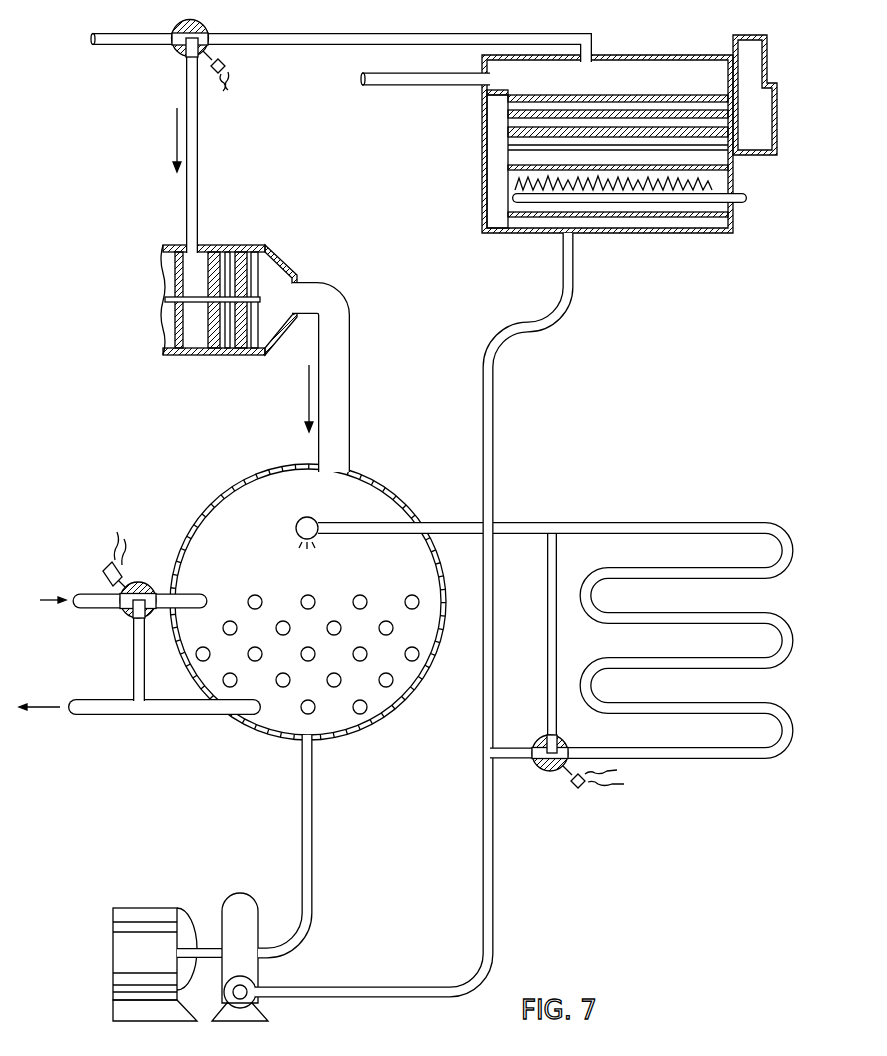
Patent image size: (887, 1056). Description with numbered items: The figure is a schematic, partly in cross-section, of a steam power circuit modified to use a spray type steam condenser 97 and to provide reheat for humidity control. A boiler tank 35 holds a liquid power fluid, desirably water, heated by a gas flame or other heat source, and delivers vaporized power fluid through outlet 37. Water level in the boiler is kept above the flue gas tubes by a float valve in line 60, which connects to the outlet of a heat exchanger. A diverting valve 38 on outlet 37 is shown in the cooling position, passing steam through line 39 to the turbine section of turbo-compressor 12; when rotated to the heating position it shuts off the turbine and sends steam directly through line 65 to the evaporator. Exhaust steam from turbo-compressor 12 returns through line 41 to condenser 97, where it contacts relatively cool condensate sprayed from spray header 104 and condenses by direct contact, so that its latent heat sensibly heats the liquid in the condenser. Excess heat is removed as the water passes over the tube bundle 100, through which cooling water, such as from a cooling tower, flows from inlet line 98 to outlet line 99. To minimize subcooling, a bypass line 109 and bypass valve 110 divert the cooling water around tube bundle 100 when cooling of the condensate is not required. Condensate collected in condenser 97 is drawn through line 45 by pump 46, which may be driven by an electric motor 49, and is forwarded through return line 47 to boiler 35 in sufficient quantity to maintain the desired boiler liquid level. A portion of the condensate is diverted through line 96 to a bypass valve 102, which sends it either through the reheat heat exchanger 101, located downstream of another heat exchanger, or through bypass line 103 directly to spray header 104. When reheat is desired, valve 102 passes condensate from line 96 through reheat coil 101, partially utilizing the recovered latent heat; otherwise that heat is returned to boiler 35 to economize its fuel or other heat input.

The line 65 is at (147, 36).
The outlet 37 is at (589, 52).
The diverting valve 38 is at (178, 52).
The line 39 is at (198, 172).
The line 60 is at (418, 82).
The boiler tank 35 is at (737, 171).
The turbo-compressor 12 is at (191, 362).
The line 41 is at (342, 394).
The spray type steam condenser 97 is at (397, 497).
The spray header 104 is at (311, 523).
The tube bundle 100 is at (356, 597).
The reheat heat exchanger 101 is at (678, 519).
The bypass valve 110 is at (145, 581).
The inlet line 98 is at (92, 610).
The bypass line 109 is at (135, 674).
The outlet line 99 is at (181, 712).
The bypass line 103 is at (547, 652).
The line 96 is at (512, 752).
The bypass valve 102 is at (545, 766).
The line 45 is at (305, 822).
The pump 46 is at (247, 903).
The electric motor 49 is at (142, 921).
The return line 47 is at (487, 929).